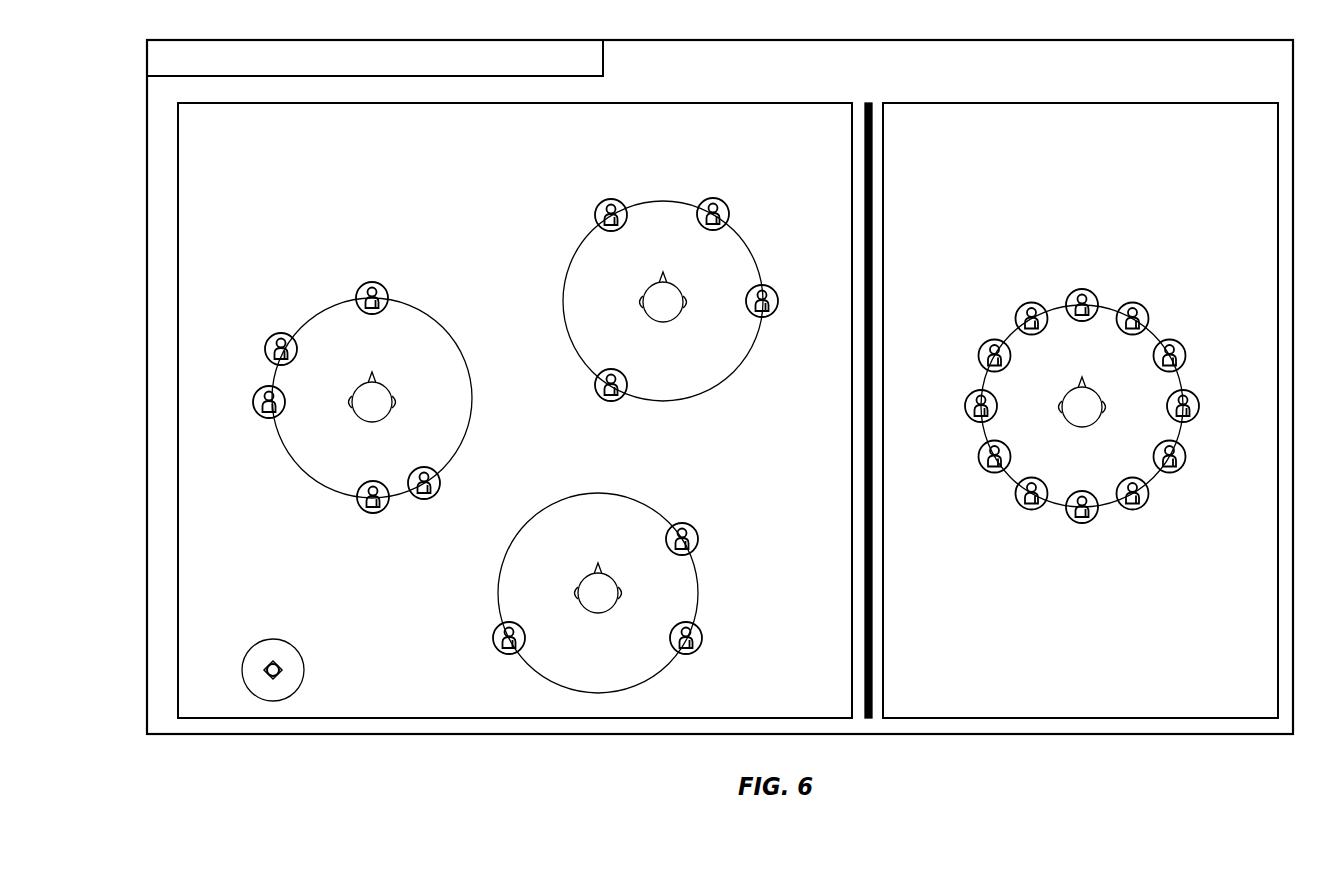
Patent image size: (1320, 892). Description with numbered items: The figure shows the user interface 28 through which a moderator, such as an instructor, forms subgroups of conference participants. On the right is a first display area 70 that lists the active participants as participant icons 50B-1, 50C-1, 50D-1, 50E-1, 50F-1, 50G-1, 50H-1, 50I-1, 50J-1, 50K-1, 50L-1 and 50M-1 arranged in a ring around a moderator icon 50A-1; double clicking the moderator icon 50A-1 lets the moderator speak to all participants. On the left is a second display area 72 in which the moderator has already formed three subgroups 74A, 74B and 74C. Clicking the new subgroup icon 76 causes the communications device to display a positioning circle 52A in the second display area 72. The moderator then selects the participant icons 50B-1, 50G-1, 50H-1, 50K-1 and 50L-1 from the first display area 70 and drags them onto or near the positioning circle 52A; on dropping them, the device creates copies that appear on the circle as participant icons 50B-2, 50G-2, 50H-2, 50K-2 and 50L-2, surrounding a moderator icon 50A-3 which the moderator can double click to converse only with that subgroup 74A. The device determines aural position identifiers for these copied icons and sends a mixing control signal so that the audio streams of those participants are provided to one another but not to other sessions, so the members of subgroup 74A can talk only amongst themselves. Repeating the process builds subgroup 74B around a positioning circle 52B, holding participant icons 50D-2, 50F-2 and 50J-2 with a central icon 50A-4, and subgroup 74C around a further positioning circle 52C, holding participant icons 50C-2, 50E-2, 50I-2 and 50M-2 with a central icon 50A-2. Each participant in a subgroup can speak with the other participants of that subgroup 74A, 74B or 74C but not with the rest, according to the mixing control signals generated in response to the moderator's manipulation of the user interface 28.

The user interface 28 is at (1107, 39).
The second display area 72 is at (515, 410).
The first display area 70 is at (1080, 410).
The new subgroup icon 76 is at (304, 660).
The subgroup 74A is at (300, 282).
The subgroup 74B is at (670, 482).
The subgroup 74C is at (640, 182).
The positioning circle 52A is at (459, 338).
The positioning circle 52B is at (600, 492).
The subgroup circle C 52C is at (567, 276).
The moderator icon 50A-1 is at (1082, 427).
The user avatar icon 50A-2 is at (676, 319).
The moderator icon 50A-3 is at (385, 416).
The user avatar icon 50A-4 is at (584, 578).
The participant icon 50B-1 is at (1096, 292).
The participant icon 50B-2 is at (386, 289).
The participant icon 50C-1 is at (1146, 306).
The participant icon 50C-2 is at (724, 203).
The participant icon 50D-1 is at (1181, 341).
The participant icon 50D-2 is at (696, 529).
The participant icon 50E-1 is at (1196, 398).
The participant icon 50E-2 is at (773, 291).
The participant icon 50F-1 is at (1190, 447).
The participant icon 50F-2 is at (701, 636).
The participant icon 50G-1 is at (1150, 497).
The participant icon 50G-2 is at (437, 487).
The participant icon 50H-1 is at (1096, 521).
The participant icon 50H-2 is at (383, 509).
The participant icon 50I-1 is at (1014, 490).
The participant icon 50I-2 is at (597, 390).
The participant icon 50J-1 is at (979, 452).
The participant icon 50J-2 is at (496, 630).
The participant icon 50K-1 is at (966, 396).
The participant icon 50K-2 is at (256, 391).
The participant icon 50L-1 is at (983, 341).
The participant icon 50L-2 is at (271, 336).
The participant icon 50M-1 is at (1018, 306).
The participant icon 50M-2 is at (599, 203).